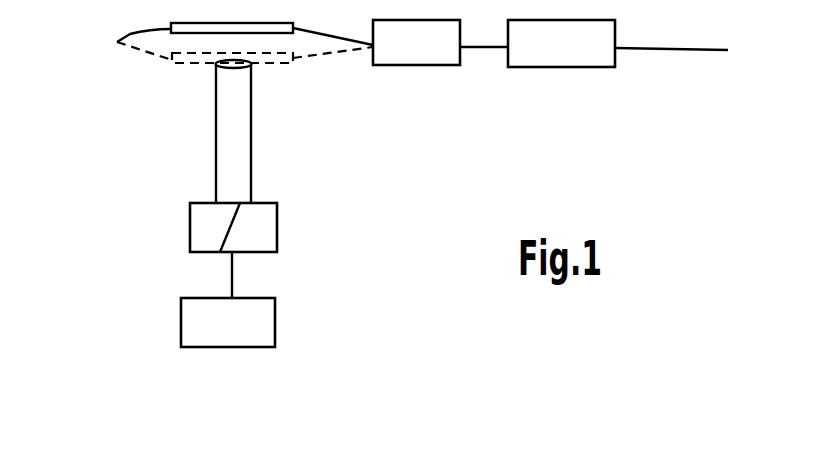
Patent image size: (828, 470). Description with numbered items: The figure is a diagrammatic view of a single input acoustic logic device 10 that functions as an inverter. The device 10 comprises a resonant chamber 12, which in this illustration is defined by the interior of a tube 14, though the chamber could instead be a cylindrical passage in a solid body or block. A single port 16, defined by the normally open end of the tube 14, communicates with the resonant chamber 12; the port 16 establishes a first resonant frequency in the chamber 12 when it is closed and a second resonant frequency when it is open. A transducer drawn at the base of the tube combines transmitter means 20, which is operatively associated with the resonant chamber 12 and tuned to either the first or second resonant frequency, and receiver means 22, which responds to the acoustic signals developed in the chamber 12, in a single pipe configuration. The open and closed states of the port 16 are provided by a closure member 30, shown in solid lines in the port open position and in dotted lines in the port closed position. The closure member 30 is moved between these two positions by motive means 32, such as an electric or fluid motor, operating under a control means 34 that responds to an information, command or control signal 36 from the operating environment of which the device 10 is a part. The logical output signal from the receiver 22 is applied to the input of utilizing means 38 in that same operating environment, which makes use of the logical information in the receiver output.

The acoustic logic device 10 is at (92, 161).
The resonant chamber 12 is at (225, 130).
The tube 14 is at (216, 172).
The single port 16 is at (247, 68).
The transmitter means 20 is at (190, 232).
The receiver means 22 is at (277, 226).
The closure member 30 is at (230, 43).
The motive means 32 is at (408, 65).
The control means 34 is at (525, 67).
The control signal 36 is at (653, 50).
The utilizing means 38 is at (181, 330).